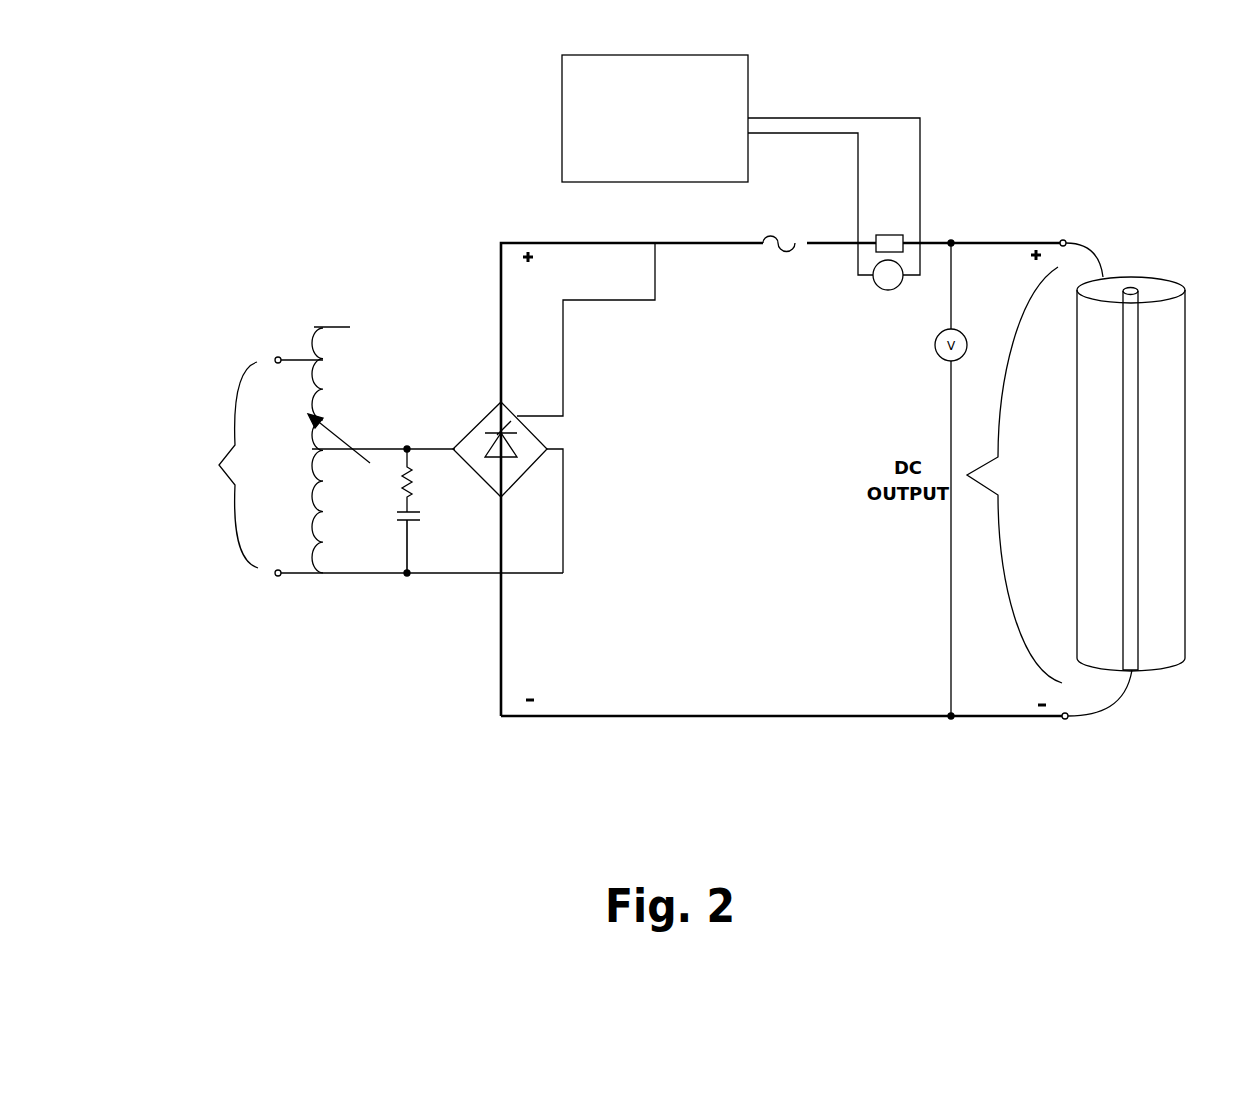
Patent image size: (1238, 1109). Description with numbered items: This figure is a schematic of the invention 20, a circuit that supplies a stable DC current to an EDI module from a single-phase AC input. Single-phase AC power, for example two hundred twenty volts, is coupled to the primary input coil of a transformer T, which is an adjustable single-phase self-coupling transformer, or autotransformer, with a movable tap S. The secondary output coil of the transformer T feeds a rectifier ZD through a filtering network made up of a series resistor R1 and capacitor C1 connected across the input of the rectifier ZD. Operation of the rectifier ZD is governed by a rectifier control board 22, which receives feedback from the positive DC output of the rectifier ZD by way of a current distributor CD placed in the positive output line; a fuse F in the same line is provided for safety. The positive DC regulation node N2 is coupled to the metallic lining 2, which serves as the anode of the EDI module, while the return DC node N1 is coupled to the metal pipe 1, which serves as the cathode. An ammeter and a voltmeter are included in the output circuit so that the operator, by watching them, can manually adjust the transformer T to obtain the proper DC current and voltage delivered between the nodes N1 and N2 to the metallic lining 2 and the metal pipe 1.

The invention 20 is at (390, 228).
The rectifier control board 22 is at (750, 70).
The metallic lining 2 is at (1186, 367).
The metal pipe 1 is at (1123, 632).
The transformer T is at (293, 513).
The slider tap S is at (372, 448).
The series resistor R1 is at (425, 480).
The capacitor C1 is at (425, 542).
The rectifier ZD is at (554, 408).
The fuse F is at (775, 237).
The current distributor CD is at (895, 235).
The return DC node N1 is at (1064, 718).
The positive DC regulation node N2 is at (1061, 241).